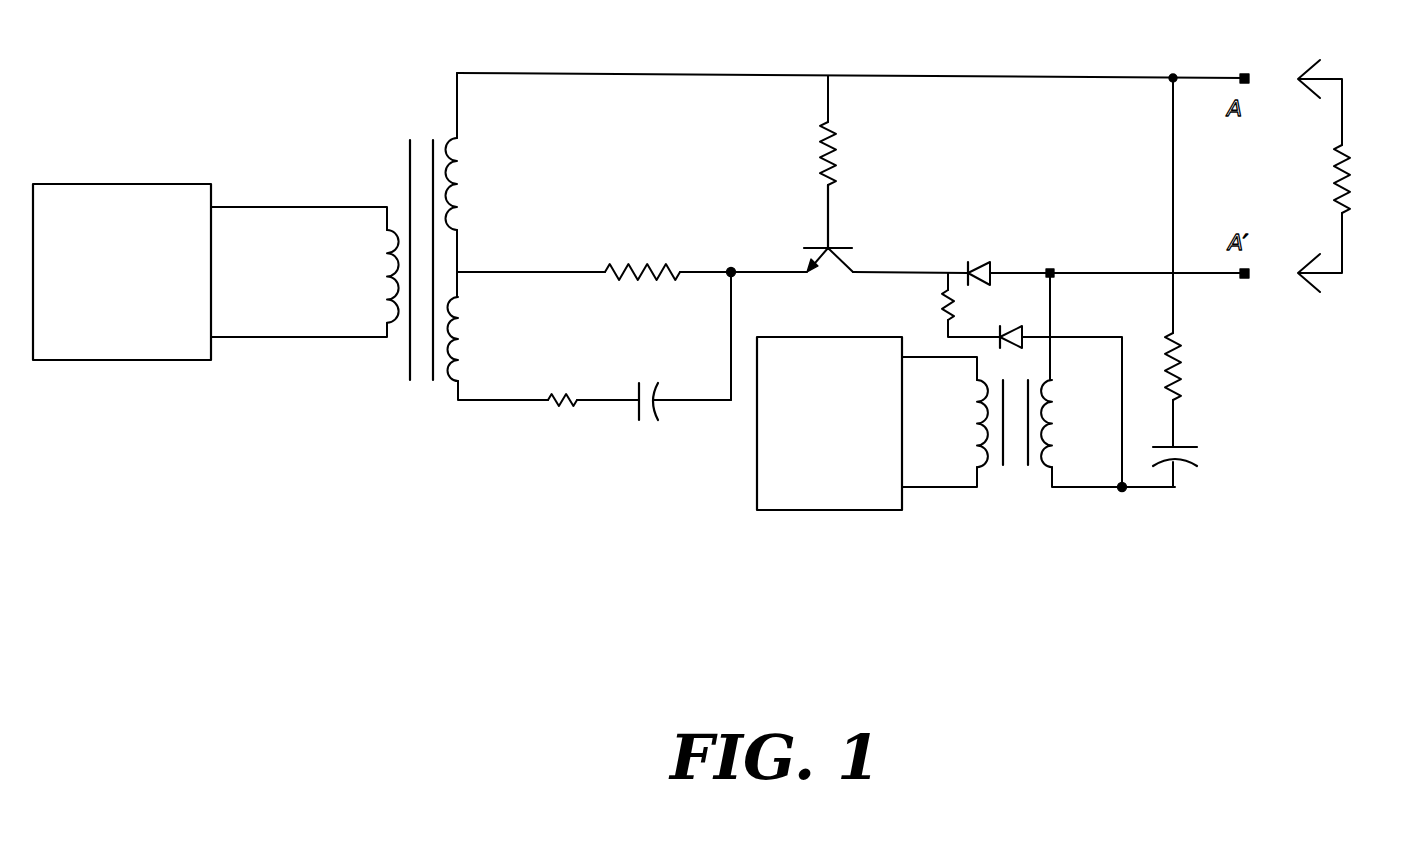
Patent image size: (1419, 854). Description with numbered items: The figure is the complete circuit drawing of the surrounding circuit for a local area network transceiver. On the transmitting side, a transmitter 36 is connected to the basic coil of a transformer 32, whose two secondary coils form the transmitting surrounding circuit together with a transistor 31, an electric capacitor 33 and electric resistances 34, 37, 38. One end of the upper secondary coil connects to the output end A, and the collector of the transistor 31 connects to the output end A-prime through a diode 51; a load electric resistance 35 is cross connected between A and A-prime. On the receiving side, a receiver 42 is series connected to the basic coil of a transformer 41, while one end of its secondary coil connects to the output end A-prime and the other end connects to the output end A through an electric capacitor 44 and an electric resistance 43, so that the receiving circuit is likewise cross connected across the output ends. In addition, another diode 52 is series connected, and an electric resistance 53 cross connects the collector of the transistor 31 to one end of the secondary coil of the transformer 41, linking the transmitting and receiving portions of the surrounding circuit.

The transistor 31 is at (828, 244).
The transformer 32 is at (449, 236).
The electric capacitor 33 is at (657, 389).
The electric resistance 34 is at (642, 255).
The load electric resistance 35 is at (1336, 176).
The transmitter 36 is at (122, 259).
The electric resistance 37 is at (846, 130).
The electric resistance 38 is at (561, 420).
The transformer 41 is at (999, 434).
The receiver 42 is at (829, 411).
The electric resistance 43 is at (1198, 366).
The electric capacitor 44 is at (1199, 456).
The diode 51 is at (985, 259).
The diode 52 is at (1008, 326).
The electric resistance 53 is at (954, 305).